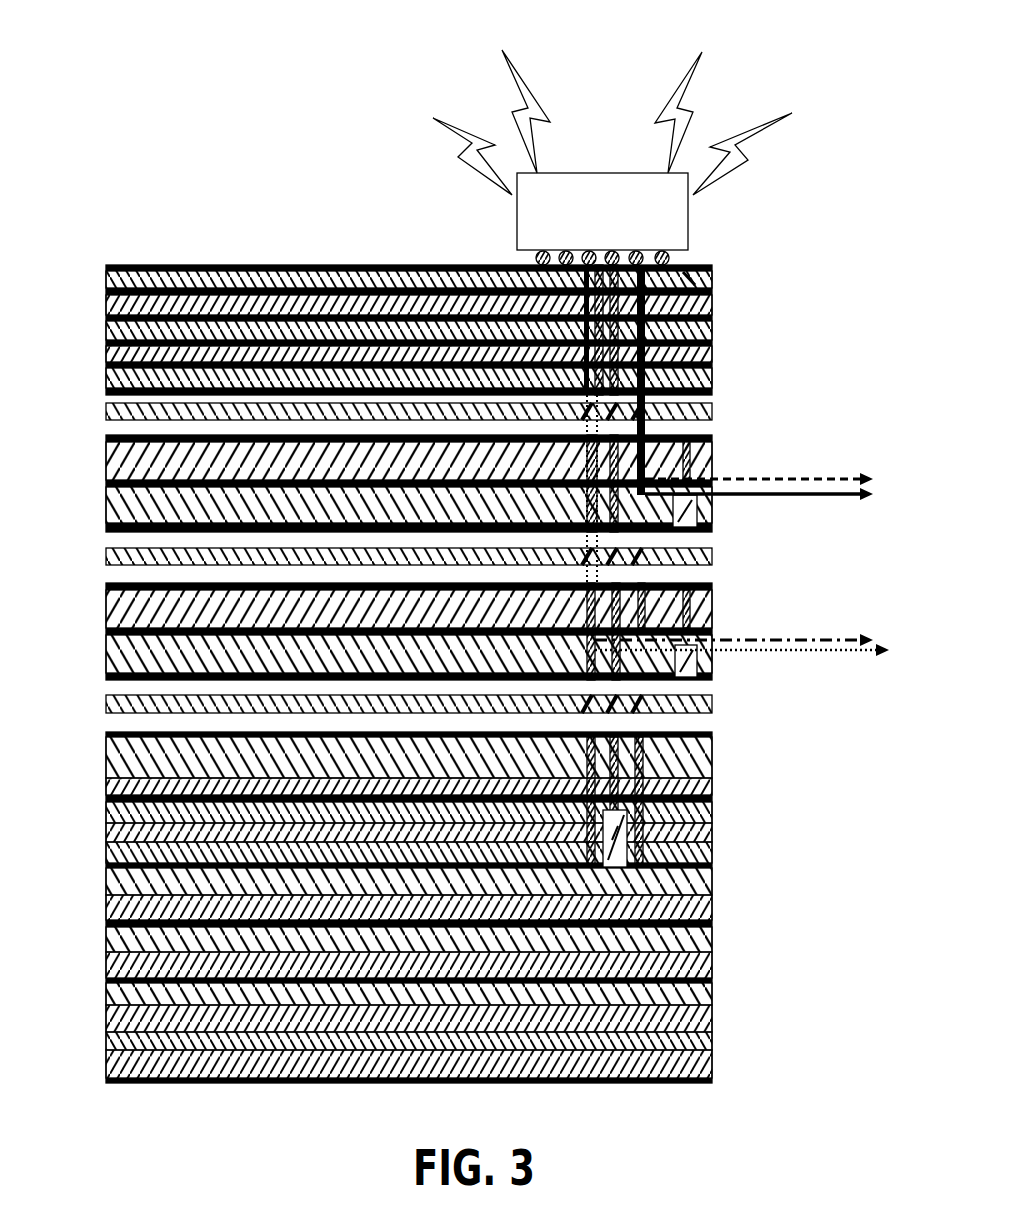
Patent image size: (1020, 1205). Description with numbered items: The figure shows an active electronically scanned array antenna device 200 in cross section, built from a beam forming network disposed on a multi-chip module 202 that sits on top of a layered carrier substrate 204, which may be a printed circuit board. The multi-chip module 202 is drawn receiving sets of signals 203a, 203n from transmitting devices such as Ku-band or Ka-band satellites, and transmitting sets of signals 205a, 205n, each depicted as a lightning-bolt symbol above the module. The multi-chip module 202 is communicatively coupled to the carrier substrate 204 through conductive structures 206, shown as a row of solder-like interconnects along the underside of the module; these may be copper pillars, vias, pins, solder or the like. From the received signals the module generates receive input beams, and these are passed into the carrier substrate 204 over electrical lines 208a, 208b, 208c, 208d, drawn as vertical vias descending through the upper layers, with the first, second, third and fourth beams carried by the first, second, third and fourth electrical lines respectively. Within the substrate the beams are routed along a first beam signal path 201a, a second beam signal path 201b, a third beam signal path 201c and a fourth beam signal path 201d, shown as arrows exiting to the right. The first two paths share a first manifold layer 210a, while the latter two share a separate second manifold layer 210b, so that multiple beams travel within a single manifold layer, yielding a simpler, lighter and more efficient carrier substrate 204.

The active electronically scanned array (AESA) antenna device 200 is at (98, 170).
The multi-chip module 202 is at (617, 241).
The first set of signals 203a is at (432, 122).
The set of signals 203n is at (510, 88).
The set of signals 205a is at (697, 90).
The set of signals 205n is at (762, 146).
The conductive structures 206 is at (510, 262).
The carrier substrate 204 is at (406, 662).
The first electrical line 208a is at (648, 340).
The second electrical line 208b is at (620, 362).
The third electrical line 208c is at (605, 405).
The fourth electrical line 208d is at (600, 437).
The first manifold layer 210a is at (98, 480).
The second manifold layer 210b is at (98, 632).
The Beam 1 signal path 201a is at (800, 477).
The Beam 2 signal path 201b is at (805, 498).
The Beam 3 signal path 201c is at (815, 637).
The Beam 4 signal path 201d is at (780, 655).